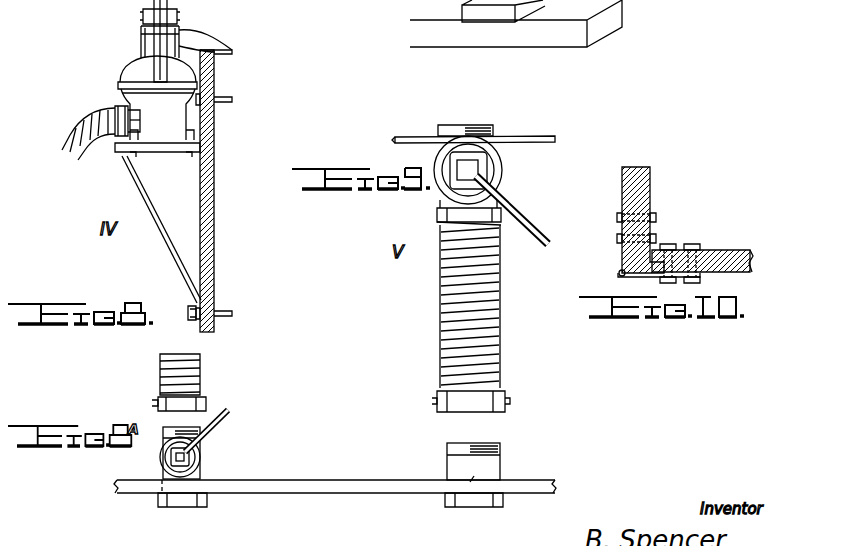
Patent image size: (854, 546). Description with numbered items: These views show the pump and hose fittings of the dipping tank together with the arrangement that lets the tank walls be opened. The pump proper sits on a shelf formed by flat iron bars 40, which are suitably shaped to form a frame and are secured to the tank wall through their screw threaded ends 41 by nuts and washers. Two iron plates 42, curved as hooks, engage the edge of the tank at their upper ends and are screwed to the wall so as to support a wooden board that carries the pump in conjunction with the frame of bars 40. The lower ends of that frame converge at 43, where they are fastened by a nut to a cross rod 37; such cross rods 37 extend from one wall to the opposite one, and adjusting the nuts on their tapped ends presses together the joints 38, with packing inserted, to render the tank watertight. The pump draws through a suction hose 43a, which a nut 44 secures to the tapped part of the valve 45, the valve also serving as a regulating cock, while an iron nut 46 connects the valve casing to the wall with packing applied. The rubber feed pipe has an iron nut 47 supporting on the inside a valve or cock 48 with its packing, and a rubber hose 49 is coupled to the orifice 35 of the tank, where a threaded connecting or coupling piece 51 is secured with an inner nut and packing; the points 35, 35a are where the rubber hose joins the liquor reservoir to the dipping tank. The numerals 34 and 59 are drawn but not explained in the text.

In FIG. 10, the bolts 34 is at (617, 232).
In FIG. 9, the point of connection 35 is at (466, 496).
In FIG. 8A, the point of connection 35a is at (200, 482).
In FIG. 8, the cross rods 37 is at (228, 97).
In FIG. 10, the joints 38 is at (685, 222).
In FIG. 8, the flat iron bars 40 is at (150, 205).
In FIG. 8, the screw threaded ends 41 is at (214, 150).
In FIG. 8, the iron plates 42 is at (214, 124).
In FIG. 8, the converging lower ends 43 is at (190, 310).
In FIG. 8A, the suction hose 43a is at (160, 372).
In FIG. 8A, the nut 44 is at (158, 406).
In FIG. 8A, the valve 45 is at (163, 456).
In FIG. 8A, the iron nut 46 is at (159, 502).
In FIG. 9, the iron nut 47 is at (441, 135).
In FIG. 9, the valve or cock 48 is at (502, 164).
In FIG. 9, the rubber hose 49 is at (440, 300).
In FIG. 9, the threaded connecting or coupling piece 51 is at (445, 500).
In FIG. 8, the hose nut 59 is at (148, 102).